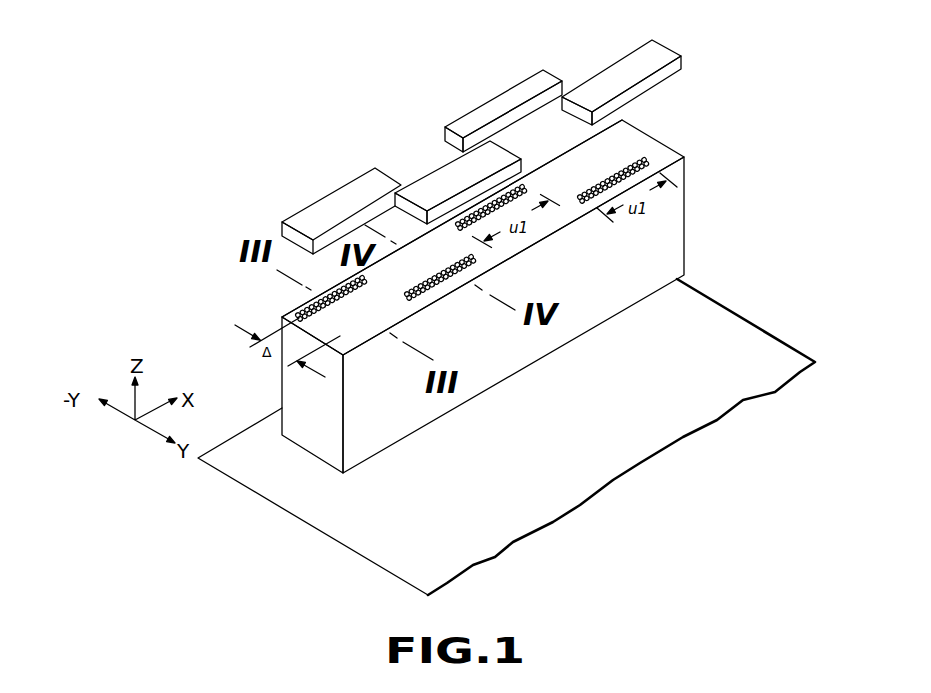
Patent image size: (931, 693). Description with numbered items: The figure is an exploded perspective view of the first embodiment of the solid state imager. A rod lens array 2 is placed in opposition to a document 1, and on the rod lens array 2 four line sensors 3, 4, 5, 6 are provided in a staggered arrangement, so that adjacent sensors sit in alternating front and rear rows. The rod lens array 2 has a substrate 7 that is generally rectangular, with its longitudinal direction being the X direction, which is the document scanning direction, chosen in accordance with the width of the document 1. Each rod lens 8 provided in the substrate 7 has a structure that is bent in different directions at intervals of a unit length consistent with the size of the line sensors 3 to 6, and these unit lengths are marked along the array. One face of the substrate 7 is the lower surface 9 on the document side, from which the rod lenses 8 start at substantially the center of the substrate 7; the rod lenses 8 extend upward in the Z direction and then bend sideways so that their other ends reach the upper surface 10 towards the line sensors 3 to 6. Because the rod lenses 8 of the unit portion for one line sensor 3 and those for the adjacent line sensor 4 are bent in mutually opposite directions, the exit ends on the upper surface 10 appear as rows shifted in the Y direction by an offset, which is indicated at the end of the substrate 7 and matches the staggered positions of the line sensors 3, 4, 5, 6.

The document 1 is at (733, 332).
The rod lens array 2 is at (478, 296).
The line sensor 3 is at (320, 205).
The line sensor 4 is at (433, 173).
The line sensor 5 is at (505, 102).
The line sensor 6 is at (615, 73).
The substrate 7 is at (295, 398).
The rod lens 8 is at (306, 313).
The lower surface 9 is at (607, 322).
The upper surface 10 is at (557, 170).